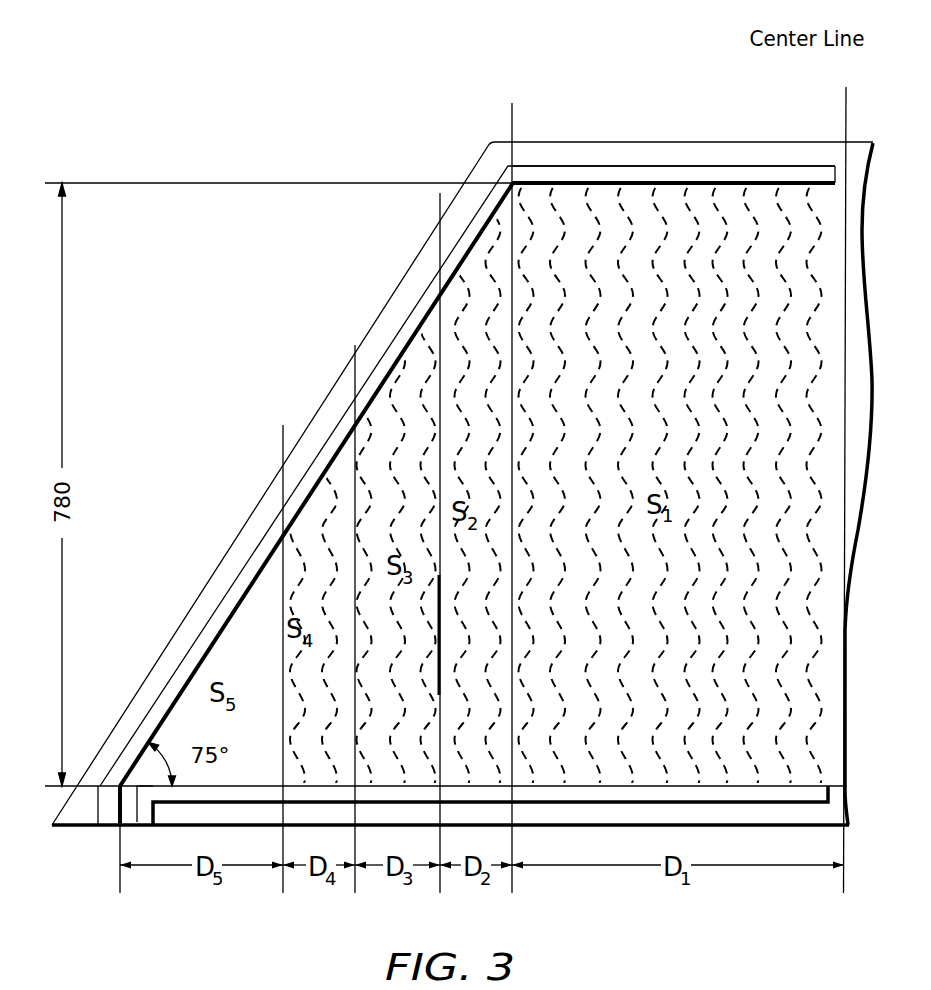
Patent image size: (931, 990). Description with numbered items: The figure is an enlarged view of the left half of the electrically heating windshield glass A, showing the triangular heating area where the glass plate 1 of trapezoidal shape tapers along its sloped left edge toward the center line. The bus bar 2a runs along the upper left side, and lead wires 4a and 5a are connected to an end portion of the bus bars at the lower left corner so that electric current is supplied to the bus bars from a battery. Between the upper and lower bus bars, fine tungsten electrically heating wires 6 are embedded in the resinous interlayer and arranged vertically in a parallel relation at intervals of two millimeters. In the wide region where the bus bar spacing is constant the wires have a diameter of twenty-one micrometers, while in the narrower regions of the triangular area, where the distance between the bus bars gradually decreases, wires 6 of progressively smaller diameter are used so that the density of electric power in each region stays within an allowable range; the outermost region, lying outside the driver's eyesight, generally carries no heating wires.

The glass plate 1 is at (337, 398).
The electrically heating windshield glass A is at (395, 261).
The electrically heating wires 6 is at (393, 380).
The bus bar 2a is at (668, 176).
The lead wire 4a is at (107, 810).
The lead wire 5a is at (147, 820).